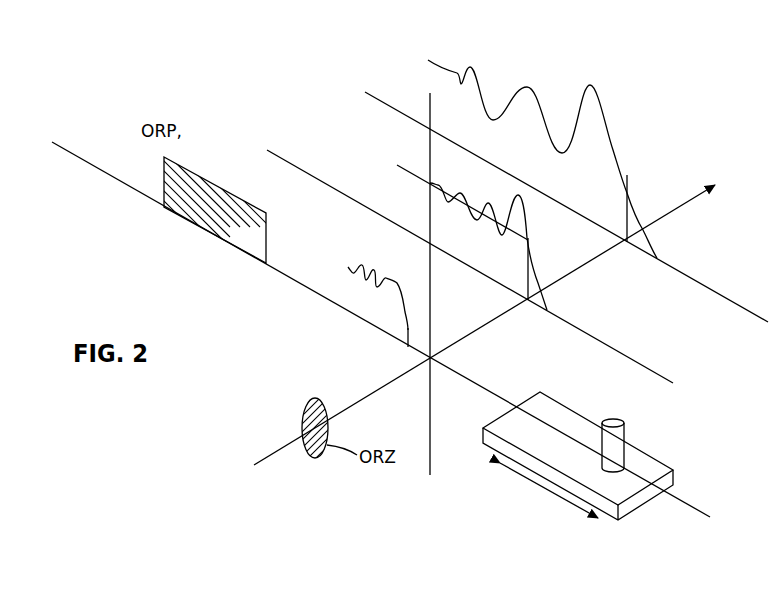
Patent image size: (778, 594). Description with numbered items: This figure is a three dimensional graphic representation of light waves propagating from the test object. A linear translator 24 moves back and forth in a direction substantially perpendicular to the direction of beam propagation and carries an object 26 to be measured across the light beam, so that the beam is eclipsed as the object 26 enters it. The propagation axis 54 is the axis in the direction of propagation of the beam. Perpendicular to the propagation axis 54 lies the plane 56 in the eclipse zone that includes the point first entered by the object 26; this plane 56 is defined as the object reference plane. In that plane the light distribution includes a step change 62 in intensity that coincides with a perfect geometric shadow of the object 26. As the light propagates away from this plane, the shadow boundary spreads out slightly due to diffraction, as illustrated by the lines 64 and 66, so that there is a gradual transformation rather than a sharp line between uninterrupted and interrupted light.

The linear translator 24 is at (655, 458).
The object 26 is at (617, 418).
The propagation axis 54 is at (390, 382).
The plane 56 is at (177, 164).
The step change 62 is at (411, 327).
The line 64 is at (535, 270).
The line 66 is at (612, 143).